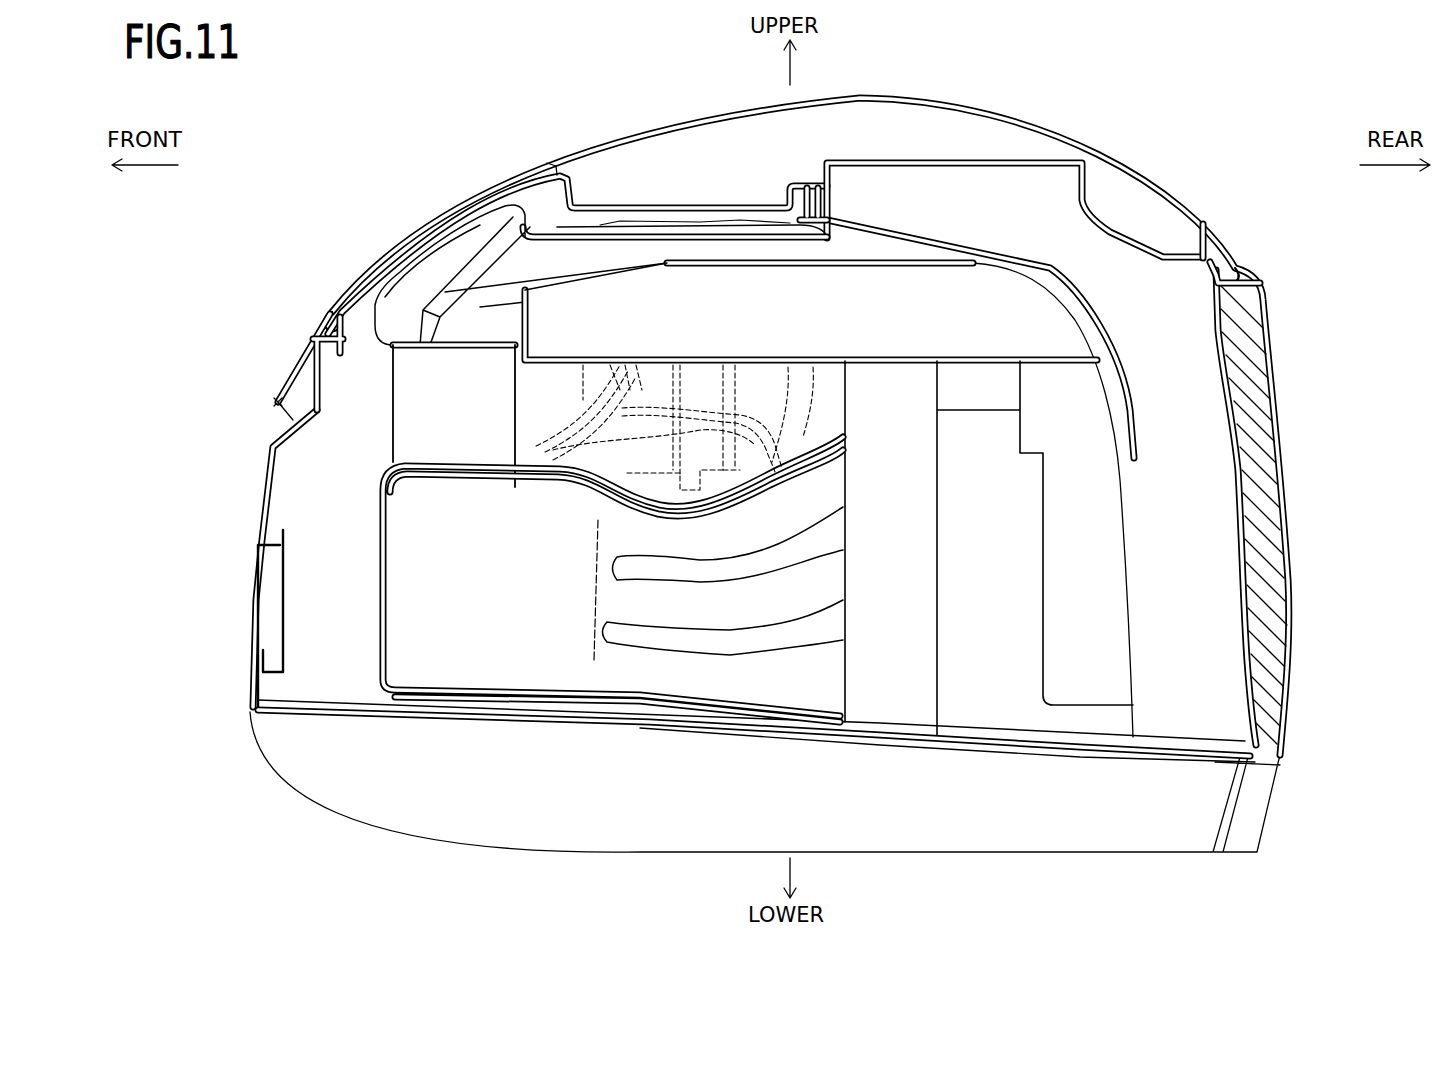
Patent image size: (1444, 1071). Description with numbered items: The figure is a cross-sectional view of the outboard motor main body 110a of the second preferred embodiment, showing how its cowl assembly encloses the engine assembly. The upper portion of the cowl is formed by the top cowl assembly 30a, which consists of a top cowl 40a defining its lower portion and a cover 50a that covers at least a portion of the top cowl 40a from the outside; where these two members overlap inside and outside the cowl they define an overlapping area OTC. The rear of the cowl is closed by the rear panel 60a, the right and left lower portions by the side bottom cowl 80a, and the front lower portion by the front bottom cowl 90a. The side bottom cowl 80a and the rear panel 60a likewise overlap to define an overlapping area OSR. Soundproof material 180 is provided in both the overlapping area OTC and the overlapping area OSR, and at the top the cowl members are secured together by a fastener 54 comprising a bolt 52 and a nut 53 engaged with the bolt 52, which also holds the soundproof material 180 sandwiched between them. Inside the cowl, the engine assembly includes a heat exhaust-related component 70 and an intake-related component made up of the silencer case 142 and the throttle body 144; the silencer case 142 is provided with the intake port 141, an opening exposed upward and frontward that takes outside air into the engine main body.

The outboard motor main body 110a is at (1168, 42).
The top cowl assembly 30a is at (1095, 45).
The cover 50a is at (908, 97).
The top cowl 40a is at (1103, 200).
The overlapping area OTC is at (556, 164).
The heat exhaust-related component 70 is at (628, 250).
The soundproof material 180 is at (492, 192).
The rear panel 60a is at (1288, 497).
The overlapping area OSR is at (1260, 364).
The side bottom cowl 80a is at (1240, 420).
The fastener 54 is at (218, 287).
The bolt 52 is at (332, 320).
The nut 53 is at (316, 341).
The silencer case 142 is at (425, 272).
The intake port 141 is at (487, 263).
The throttle body 144 is at (425, 410).
The front bottom cowl 90a is at (252, 612).